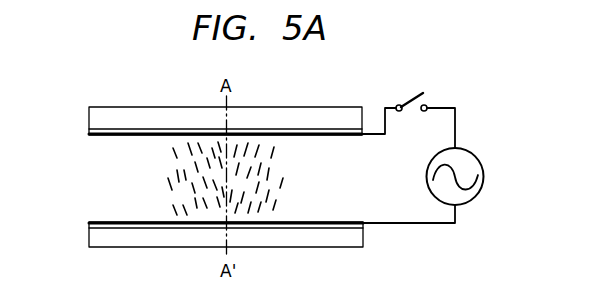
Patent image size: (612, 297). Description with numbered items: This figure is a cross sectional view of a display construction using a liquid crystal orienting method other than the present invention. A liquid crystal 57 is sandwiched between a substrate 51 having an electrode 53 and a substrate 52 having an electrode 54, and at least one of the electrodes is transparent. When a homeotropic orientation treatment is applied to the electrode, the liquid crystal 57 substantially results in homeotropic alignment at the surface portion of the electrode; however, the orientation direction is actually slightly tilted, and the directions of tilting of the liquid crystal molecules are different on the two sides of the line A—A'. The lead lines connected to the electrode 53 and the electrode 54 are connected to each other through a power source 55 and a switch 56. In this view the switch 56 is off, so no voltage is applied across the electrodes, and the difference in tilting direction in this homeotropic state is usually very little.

The substrate 51 is at (95, 118).
The substrate 52 is at (90, 235).
The electrode 53 is at (89, 135).
The electrode 54 is at (97, 222).
The power source 55 is at (483, 192).
The switch 56 is at (408, 100).
The liquid crystal 57 is at (281, 161).